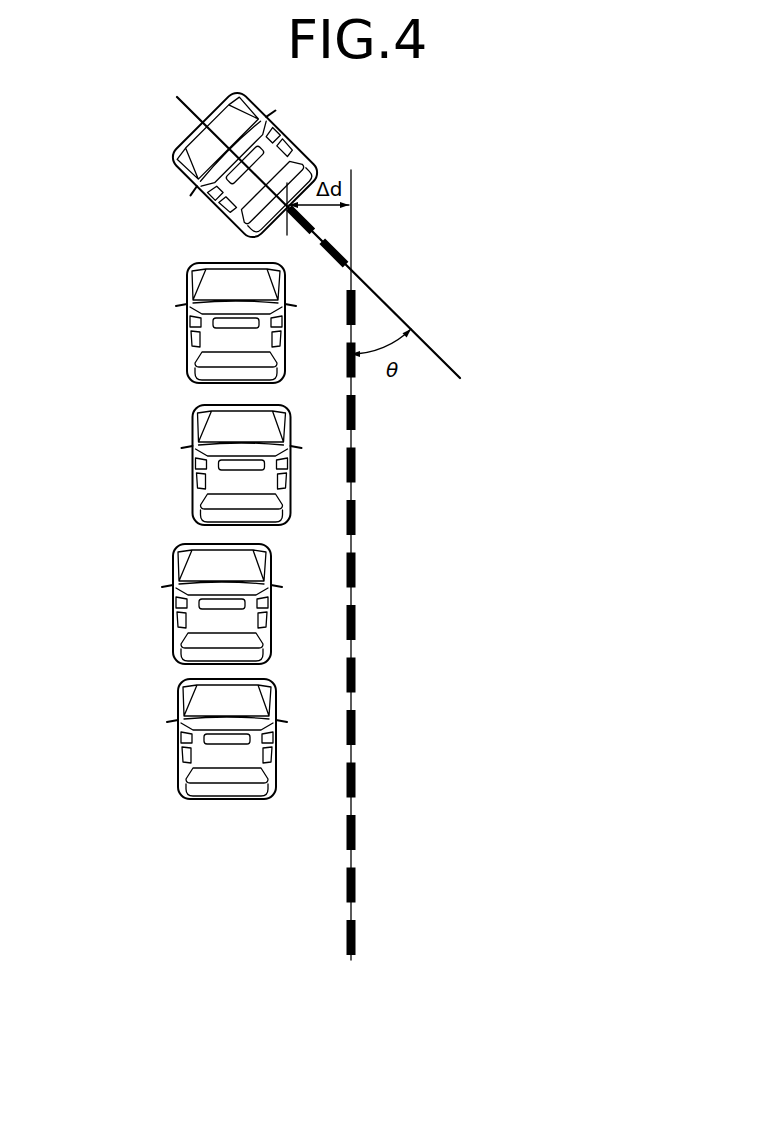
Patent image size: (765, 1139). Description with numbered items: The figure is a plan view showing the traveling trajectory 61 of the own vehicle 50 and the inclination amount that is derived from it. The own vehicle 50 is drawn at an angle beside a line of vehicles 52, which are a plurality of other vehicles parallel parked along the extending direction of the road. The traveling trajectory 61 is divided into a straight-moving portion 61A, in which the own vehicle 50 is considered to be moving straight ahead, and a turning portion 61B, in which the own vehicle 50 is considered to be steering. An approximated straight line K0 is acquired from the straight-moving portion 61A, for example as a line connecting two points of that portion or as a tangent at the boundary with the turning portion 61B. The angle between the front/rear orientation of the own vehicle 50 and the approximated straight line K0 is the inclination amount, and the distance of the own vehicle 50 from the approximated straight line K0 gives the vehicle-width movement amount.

The own vehicle 50 is at (285, 130).
The line of vehicles 52 is at (172, 620).
The approximated straight line K0 is at (352, 228).
The traveling trajectory 61 is at (464, 582).
The straight-moving portion 61A is at (353, 517).
The turning portion 61B is at (351, 269).